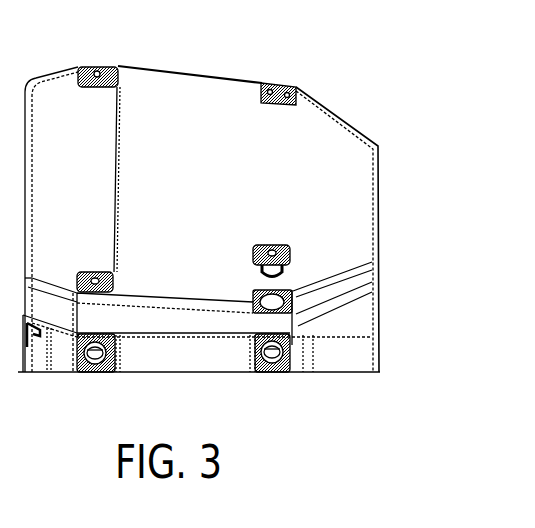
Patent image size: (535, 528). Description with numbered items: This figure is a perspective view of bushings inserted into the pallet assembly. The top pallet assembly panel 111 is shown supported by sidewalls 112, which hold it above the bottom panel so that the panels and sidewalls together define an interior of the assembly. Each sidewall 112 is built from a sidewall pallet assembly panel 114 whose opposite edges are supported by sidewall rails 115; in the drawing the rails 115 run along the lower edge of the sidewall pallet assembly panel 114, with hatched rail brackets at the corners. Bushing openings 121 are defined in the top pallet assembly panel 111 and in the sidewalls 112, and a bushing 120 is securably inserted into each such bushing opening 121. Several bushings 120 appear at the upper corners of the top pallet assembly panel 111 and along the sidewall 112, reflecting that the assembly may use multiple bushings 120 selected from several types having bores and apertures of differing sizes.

The top pallet assembly panel 111 is at (218, 88).
The sidewall 112 is at (24, 362).
The sidewall pallet assembly panel 114 is at (158, 340).
The sidewall rail 115 is at (62, 345).
The bushing 120 is at (97, 73).
The bushing opening 121 is at (298, 292).